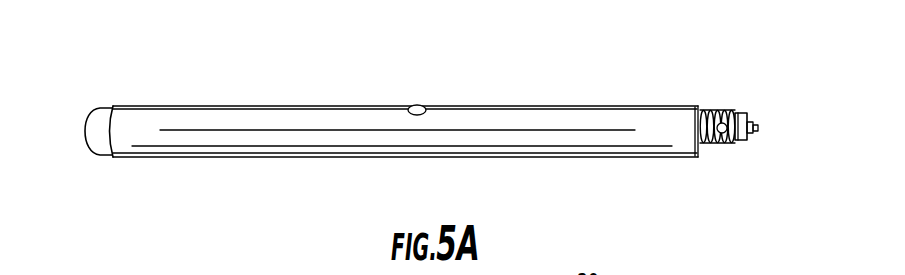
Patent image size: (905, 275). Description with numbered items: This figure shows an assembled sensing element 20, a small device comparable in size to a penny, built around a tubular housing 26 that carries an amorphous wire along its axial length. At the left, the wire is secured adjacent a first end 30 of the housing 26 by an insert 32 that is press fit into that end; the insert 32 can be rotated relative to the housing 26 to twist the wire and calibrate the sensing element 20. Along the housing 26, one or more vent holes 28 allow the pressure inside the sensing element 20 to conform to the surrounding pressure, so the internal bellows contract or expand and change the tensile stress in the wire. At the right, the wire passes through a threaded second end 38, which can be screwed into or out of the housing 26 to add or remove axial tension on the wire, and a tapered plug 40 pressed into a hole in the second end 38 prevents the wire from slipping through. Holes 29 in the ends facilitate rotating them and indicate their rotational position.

The sensing element 20 is at (72, 65).
The housing 26 is at (222, 115).
The vent holes 28 is at (422, 116).
The holes 29 is at (723, 133).
The first end 30 is at (111, 109).
The insert 32 is at (92, 132).
The second end 38 is at (728, 113).
The tapered plug 40 is at (758, 128).